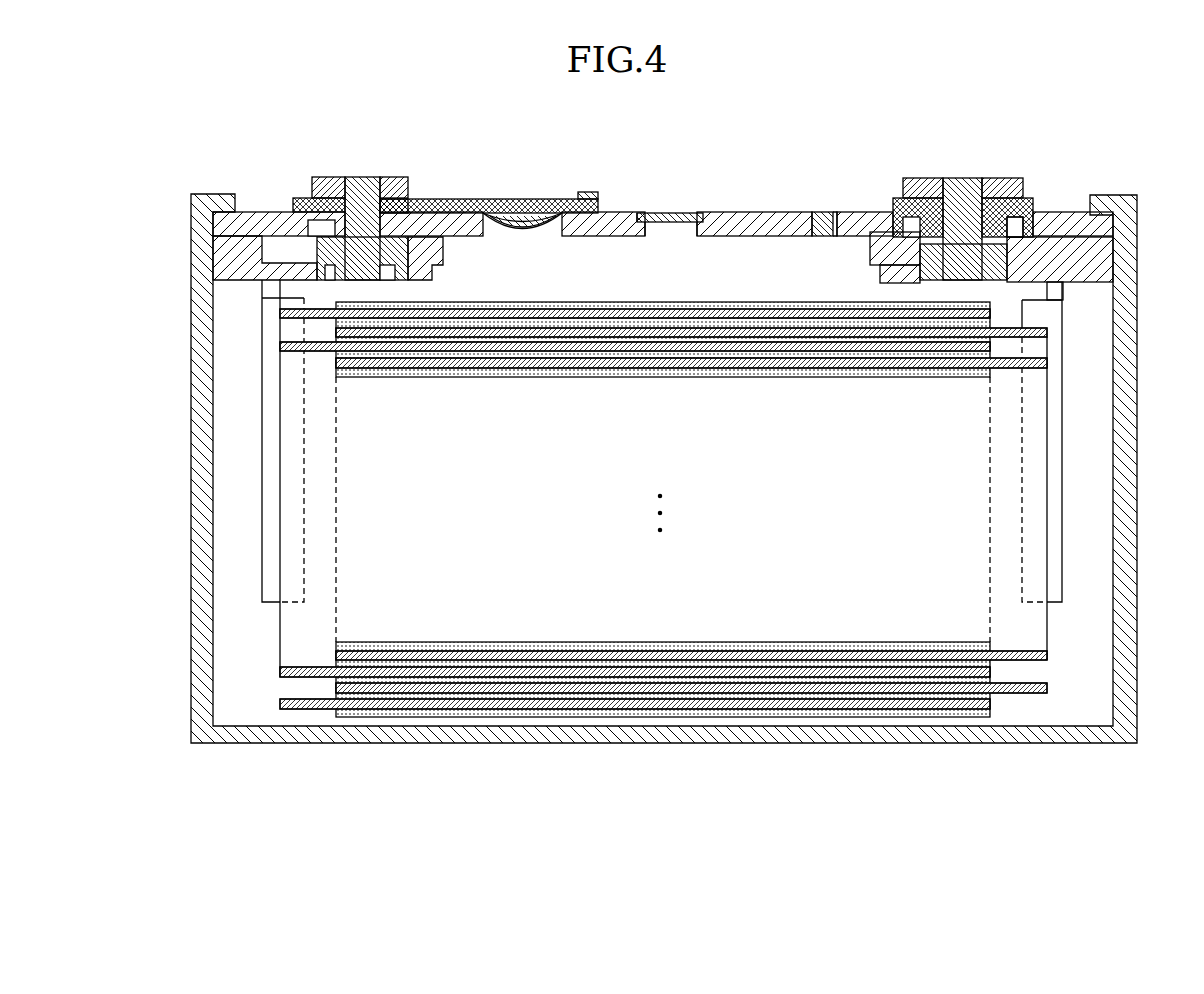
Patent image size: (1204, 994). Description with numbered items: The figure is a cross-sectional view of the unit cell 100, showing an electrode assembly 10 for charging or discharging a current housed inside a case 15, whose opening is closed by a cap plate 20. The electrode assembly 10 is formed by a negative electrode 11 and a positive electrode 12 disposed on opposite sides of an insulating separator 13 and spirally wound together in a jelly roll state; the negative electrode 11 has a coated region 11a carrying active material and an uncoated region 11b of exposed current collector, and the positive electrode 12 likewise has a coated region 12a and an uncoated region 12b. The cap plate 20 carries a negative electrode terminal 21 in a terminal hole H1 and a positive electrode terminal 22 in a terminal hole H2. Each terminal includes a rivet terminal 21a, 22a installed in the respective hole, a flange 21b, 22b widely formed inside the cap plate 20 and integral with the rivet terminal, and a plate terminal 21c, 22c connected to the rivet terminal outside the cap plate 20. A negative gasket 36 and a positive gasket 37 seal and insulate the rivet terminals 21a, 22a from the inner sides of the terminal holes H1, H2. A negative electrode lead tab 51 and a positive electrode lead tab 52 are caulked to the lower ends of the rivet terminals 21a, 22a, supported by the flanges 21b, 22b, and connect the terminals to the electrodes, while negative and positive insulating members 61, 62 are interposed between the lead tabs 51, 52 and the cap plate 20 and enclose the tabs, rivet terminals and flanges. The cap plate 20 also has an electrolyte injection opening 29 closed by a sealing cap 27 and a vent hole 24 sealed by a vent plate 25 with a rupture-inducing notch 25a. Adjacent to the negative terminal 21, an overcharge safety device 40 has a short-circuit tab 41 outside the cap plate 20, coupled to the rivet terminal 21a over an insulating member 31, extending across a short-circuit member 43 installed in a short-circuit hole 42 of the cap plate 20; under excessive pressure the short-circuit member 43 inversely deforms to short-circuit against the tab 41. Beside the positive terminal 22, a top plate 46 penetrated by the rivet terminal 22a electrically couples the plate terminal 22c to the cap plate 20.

The unit cell 100 is at (755, 110).
The electrode assembly 10 is at (798, 730).
The negative electrode 11 is at (635, 567).
The coated region 11a is at (293, 796).
The uncoated region 11b is at (306, 709).
The positive electrode 12 is at (693, 582).
The coated region 12a is at (905, 693).
The uncoated region 12b is at (895, 796).
The separator 13 is at (680, 712).
The case 15 is at (1135, 412).
The cap plate 20 is at (742, 222).
The negative electrode terminal 21 is at (362, 172).
The rivet terminal 21a is at (363, 283).
The flange 21b is at (438, 199).
The plate terminal 21c is at (395, 177).
The positive electrode terminal 22 is at (962, 170).
The rivet terminal 22a is at (985, 283).
The flange 22b is at (875, 240).
The plate terminal 22c is at (1018, 178).
The vent hole 24 is at (673, 237).
The vent plate 25 is at (692, 213).
The notch 25a is at (648, 213).
The sealing cap 27 is at (830, 212).
The electrolyte injection opening 29 is at (812, 212).
The insulating member 31 is at (585, 192).
The negative gasket 36 is at (270, 212).
The positive gasket 37 is at (912, 198).
The overcharge safety device 40 is at (491, 195).
The short-circuit tab 41 is at (474, 199).
The short-circuit hole 42 is at (552, 237).
The short-circuit member 43 is at (508, 237).
The top plate 46 is at (1030, 208).
The negative electrode lead tab 51 is at (252, 426).
The positive electrode lead tab 52 is at (1074, 562).
The negative insulating member 61 is at (218, 255).
The positive insulating member 62 is at (1090, 262).
The terminal hole H1 is at (330, 204).
The terminal hole H2 is at (1000, 205).